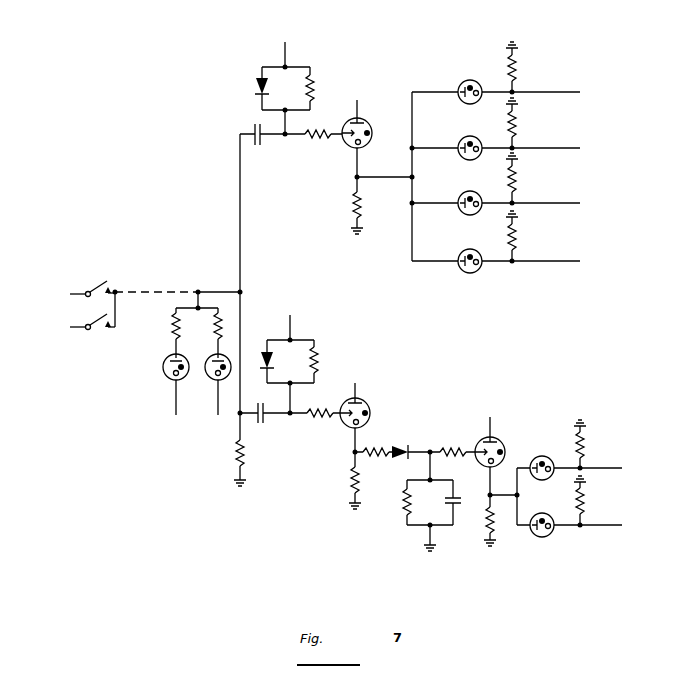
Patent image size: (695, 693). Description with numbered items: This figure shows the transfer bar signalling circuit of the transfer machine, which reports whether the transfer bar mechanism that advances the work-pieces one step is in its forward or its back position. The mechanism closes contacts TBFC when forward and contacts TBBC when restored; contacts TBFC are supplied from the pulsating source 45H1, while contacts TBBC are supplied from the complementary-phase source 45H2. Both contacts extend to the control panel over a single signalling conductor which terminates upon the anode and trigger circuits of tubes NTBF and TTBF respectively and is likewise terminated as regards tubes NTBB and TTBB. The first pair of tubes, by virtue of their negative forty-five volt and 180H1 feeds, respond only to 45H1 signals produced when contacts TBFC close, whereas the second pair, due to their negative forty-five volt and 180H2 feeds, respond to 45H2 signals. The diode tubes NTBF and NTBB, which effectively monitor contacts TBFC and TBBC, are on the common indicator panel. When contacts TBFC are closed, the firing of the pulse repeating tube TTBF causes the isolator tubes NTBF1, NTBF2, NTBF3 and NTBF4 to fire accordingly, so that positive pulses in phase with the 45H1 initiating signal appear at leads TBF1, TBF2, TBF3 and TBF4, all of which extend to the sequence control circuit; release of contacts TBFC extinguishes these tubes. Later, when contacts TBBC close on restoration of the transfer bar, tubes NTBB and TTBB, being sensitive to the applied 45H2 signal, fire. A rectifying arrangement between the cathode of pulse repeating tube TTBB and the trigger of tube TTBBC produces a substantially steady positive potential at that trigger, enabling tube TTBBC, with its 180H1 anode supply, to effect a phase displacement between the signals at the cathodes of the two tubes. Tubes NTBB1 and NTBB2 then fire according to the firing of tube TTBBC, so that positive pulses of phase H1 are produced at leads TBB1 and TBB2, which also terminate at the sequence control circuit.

The 180H1 pulsating supply 180H1 is at (424, 257).
The 180H2 pulsating supply 180H2 is at (356, 378).
The pulse repeating tube TTBF is at (372, 128).
The pulse repeating tube TTBB is at (370, 406).
The tube TTBBC is at (505, 445).
The isolator tube NTBF4 is at (470, 85).
The isolator tube NTBF3 is at (470, 141).
The isolator tube NTBF2 is at (470, 196).
The isolator tube NTBF1 is at (470, 254).
The lead TBF4 is at (563, 92).
The lead TBF3 is at (563, 148).
The lead TBF2 is at (563, 203).
The lead TBF1 is at (563, 261).
The contacts TBFC is at (93, 281).
The contacts TBBC is at (96, 332).
The 45H1 pulsating supply 45H1 is at (62, 294).
The 45H2 pulsating supply 45H2 is at (62, 328).
The diode tube NTBF is at (162, 376).
The diode tube NTBB is at (207, 360).
The tube NTBB2 is at (545, 478).
The tube NTBB1 is at (545, 535).
The lead TBB2 is at (618, 468).
The lead TBB1 is at (618, 525).